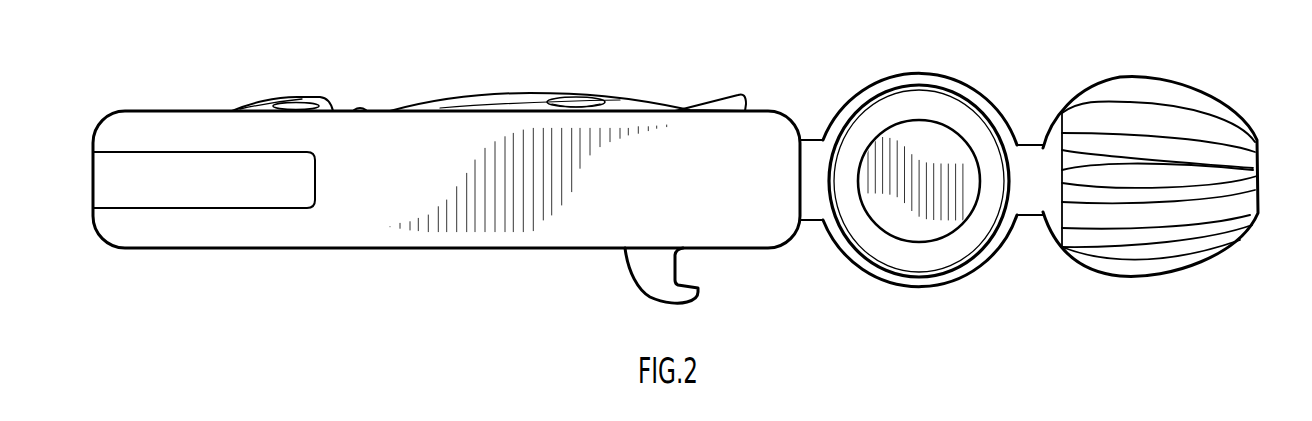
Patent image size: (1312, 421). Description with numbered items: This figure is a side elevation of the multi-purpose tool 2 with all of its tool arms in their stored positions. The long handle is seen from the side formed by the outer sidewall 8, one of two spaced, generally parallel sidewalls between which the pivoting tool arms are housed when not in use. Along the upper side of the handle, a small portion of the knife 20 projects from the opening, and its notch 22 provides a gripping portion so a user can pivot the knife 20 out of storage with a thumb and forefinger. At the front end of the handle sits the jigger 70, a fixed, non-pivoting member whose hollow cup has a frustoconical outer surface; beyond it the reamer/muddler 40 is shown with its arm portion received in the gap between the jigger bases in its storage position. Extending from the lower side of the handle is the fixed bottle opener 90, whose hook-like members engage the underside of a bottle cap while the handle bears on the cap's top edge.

The multi-purpose tool 2 is at (802, 79).
The second outer sidewall 8 is at (338, 227).
The knife 20 is at (637, 100).
The notch 22 is at (558, 98).
The reamer/muddler 40 is at (1193, 267).
The jigger 70 is at (932, 227).
The bottle opener 90 is at (629, 273).